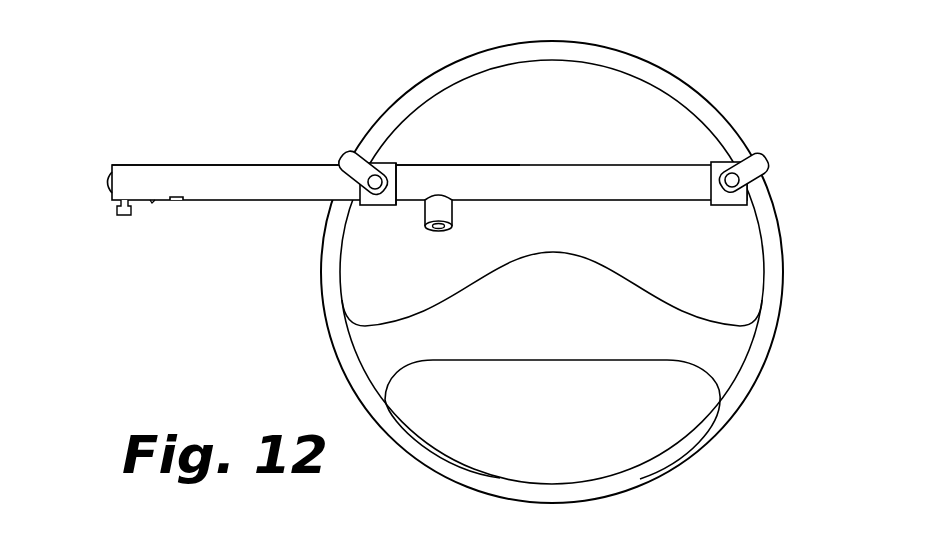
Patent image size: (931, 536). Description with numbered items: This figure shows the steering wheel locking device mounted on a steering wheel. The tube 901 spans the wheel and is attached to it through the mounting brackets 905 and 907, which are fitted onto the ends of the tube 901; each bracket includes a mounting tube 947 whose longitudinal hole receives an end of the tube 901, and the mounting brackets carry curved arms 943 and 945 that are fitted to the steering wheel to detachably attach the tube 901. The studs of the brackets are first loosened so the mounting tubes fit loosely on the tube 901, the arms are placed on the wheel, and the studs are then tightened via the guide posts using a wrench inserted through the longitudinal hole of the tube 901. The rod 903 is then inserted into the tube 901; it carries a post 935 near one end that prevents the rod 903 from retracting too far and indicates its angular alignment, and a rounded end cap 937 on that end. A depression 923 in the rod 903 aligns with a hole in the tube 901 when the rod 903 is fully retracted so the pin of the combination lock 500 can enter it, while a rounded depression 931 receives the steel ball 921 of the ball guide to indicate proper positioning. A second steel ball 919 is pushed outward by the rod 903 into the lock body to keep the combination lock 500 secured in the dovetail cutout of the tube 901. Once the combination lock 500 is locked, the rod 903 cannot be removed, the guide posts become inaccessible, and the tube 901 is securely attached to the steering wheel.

The combination lock 500 is at (447, 236).
The tube 901 is at (571, 201).
The rod 903 is at (262, 164).
The mounting bracket 905 is at (377, 210).
The mounting bracket 907 is at (766, 134).
The steel ball 919 is at (462, 186).
The steel ball 921 is at (400, 210).
The depression 923 is at (176, 206).
The depression 931 is at (152, 208).
The post 935 is at (122, 216).
The end cap 937 is at (106, 177).
The arm 943 is at (353, 150).
The arm 945 is at (772, 163).
The mounting tube 947 is at (386, 162).